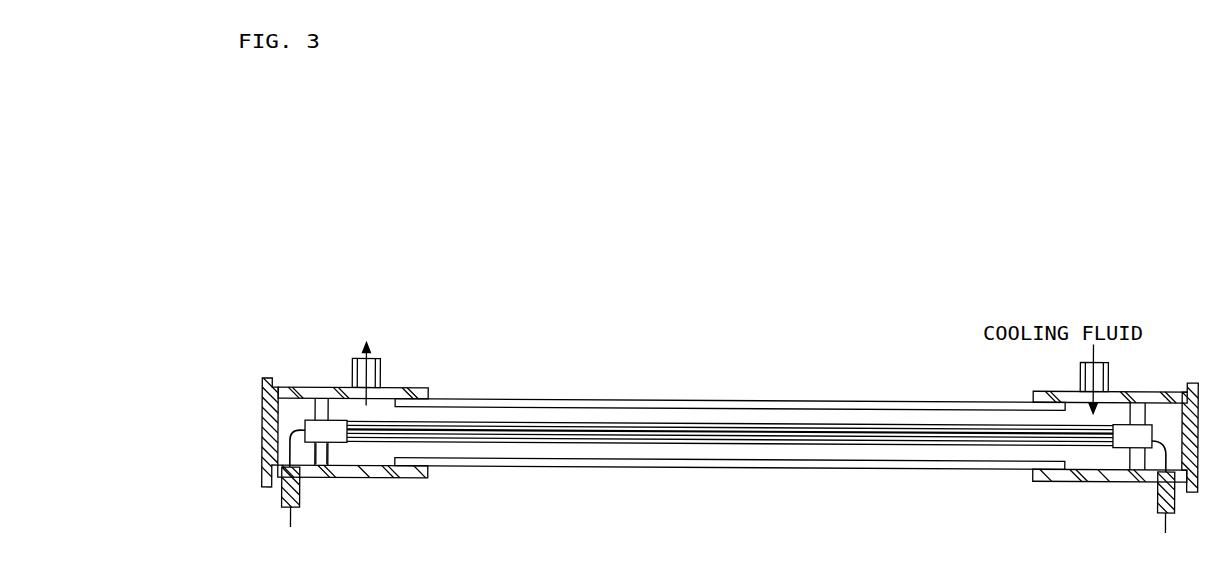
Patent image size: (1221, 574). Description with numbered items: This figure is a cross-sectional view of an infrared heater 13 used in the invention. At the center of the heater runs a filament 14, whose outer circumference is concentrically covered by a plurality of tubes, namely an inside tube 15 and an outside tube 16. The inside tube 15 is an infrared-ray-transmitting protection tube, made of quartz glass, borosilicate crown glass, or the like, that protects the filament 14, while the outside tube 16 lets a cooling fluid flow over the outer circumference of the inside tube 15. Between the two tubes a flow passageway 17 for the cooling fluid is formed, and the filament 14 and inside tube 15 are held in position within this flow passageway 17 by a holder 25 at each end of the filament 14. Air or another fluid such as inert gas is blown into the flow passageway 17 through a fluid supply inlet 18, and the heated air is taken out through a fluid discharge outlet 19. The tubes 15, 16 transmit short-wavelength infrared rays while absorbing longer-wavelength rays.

The infrared heater 13 is at (548, 362).
The filament 14 is at (671, 420).
The inside tube 15 is at (742, 422).
The outside tube 16 is at (835, 405).
The flow passageway 17 is at (908, 418).
The fluid supply inlet 18 is at (1110, 381).
The fluid discharge outlet 19 is at (374, 370).
The holder 25 is at (329, 452).